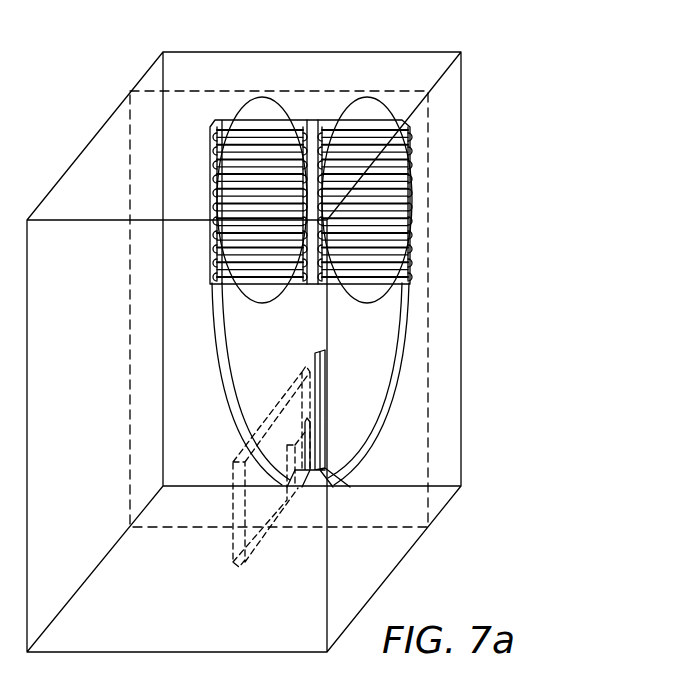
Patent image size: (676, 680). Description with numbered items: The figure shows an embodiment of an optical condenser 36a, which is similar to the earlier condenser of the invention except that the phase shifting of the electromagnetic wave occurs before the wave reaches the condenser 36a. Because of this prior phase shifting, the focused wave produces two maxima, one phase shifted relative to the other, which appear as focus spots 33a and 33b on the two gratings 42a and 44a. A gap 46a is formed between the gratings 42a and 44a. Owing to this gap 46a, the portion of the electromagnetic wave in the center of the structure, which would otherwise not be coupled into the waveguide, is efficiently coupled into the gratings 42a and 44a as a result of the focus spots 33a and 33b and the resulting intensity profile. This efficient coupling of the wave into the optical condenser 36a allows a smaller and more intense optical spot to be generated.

The focus spot 33a is at (233, 113).
The focus spot 33b is at (396, 112).
The grating 42a is at (213, 137).
The grating 44a is at (327, 123).
The gap 46a is at (309, 138).
The optical condenser 36a is at (546, 169).